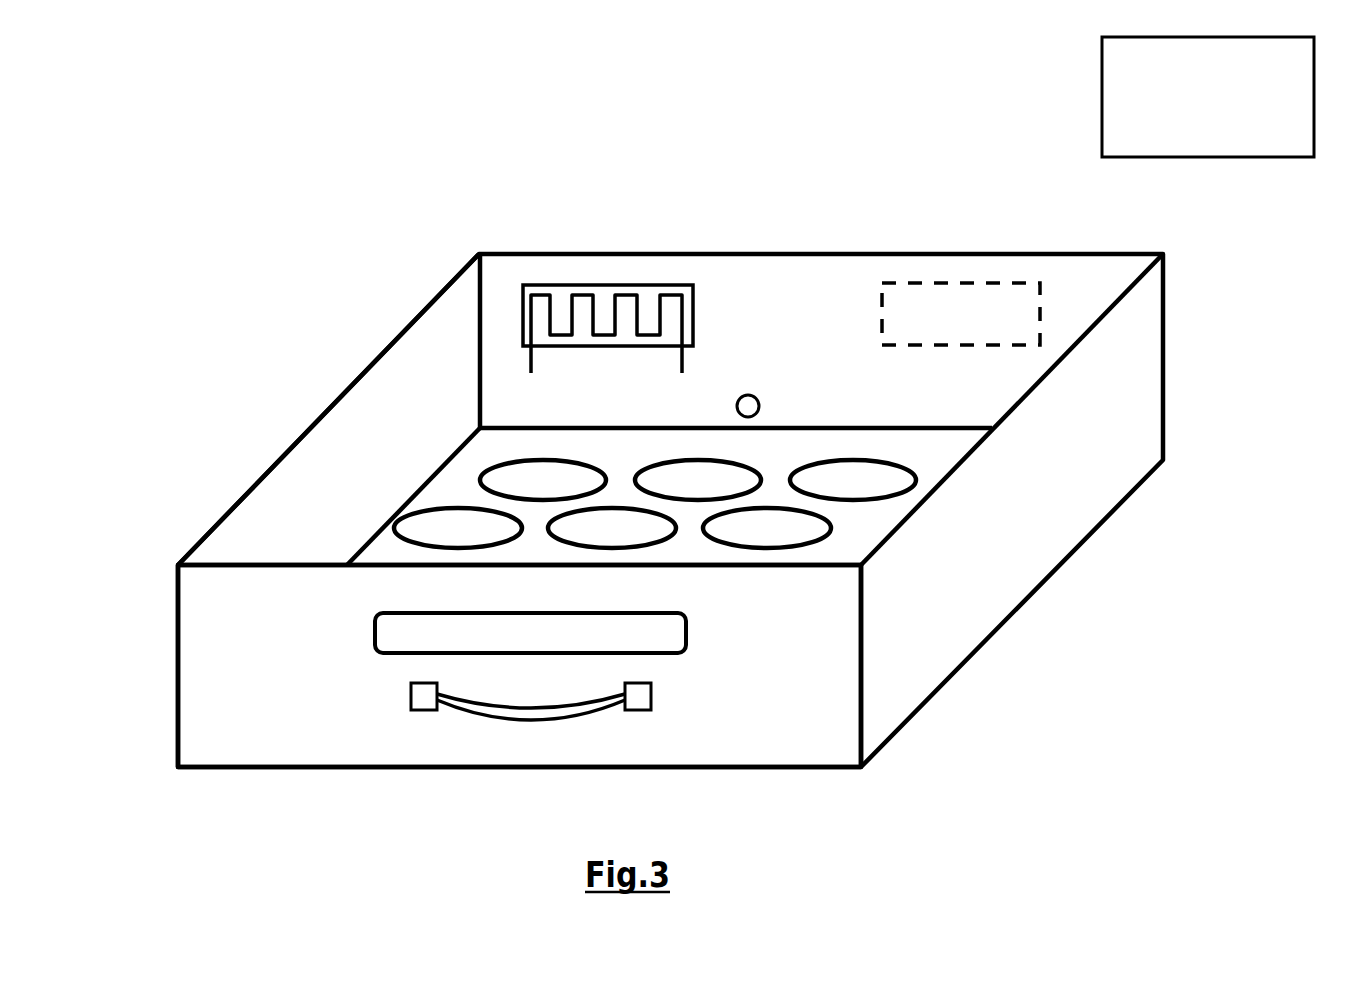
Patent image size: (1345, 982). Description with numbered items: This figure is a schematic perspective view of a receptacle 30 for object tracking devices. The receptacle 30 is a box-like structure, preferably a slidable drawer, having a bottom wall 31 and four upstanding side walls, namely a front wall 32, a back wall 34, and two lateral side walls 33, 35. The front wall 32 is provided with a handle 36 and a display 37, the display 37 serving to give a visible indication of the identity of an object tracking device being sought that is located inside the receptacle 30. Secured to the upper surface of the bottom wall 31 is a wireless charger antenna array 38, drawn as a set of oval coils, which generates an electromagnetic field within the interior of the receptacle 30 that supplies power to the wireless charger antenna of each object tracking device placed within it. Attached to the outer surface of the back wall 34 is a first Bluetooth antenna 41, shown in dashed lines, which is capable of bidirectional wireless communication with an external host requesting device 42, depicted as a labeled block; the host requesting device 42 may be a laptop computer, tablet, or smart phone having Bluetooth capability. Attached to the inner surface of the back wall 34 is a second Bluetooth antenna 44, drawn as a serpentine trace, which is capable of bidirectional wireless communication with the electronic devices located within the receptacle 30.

The receptacle 30 is at (347, 381).
The bottom wall 31 is at (937, 443).
The front wall 32 is at (778, 730).
The side wall 33 is at (1017, 522).
The back wall 34 is at (845, 287).
The side wall 35 is at (238, 550).
The handle 36 is at (483, 714).
The display 37 is at (392, 633).
The wireless charger antenna array 38 is at (835, 530).
The first Bluetooth antenna 41 is at (1038, 233).
The host requesting device 42 is at (1120, 95).
The second Bluetooth antenna 44 is at (725, 222).